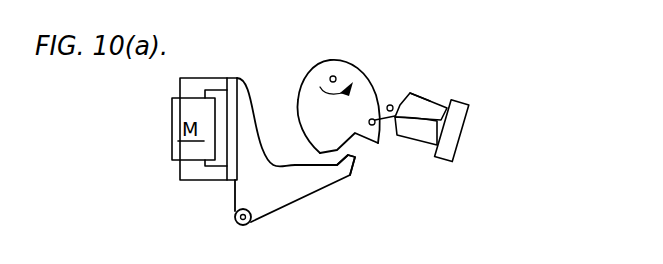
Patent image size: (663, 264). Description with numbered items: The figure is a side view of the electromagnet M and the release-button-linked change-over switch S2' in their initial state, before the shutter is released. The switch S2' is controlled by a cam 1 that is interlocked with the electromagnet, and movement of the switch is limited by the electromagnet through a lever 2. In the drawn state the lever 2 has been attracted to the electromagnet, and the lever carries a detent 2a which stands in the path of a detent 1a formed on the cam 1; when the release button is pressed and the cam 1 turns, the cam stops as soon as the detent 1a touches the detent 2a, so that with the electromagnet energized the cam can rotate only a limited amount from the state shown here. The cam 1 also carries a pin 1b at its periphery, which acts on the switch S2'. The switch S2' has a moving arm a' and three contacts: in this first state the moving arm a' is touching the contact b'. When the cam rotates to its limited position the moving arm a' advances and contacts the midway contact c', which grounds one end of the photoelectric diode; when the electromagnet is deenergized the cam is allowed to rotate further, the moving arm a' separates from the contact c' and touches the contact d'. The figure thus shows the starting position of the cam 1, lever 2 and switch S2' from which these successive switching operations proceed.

The cam 1 is at (362, 70).
The detent 1a is at (360, 146).
The cam pin 1b is at (369, 120).
The lever 2 is at (247, 188).
The detent 2a is at (352, 174).
The moving arm a' is at (442, 97).
The contact b' is at (422, 155).
The midway contact c' is at (385, 95).
The contact d' is at (431, 80).
The change-over switch S2' is at (474, 131).